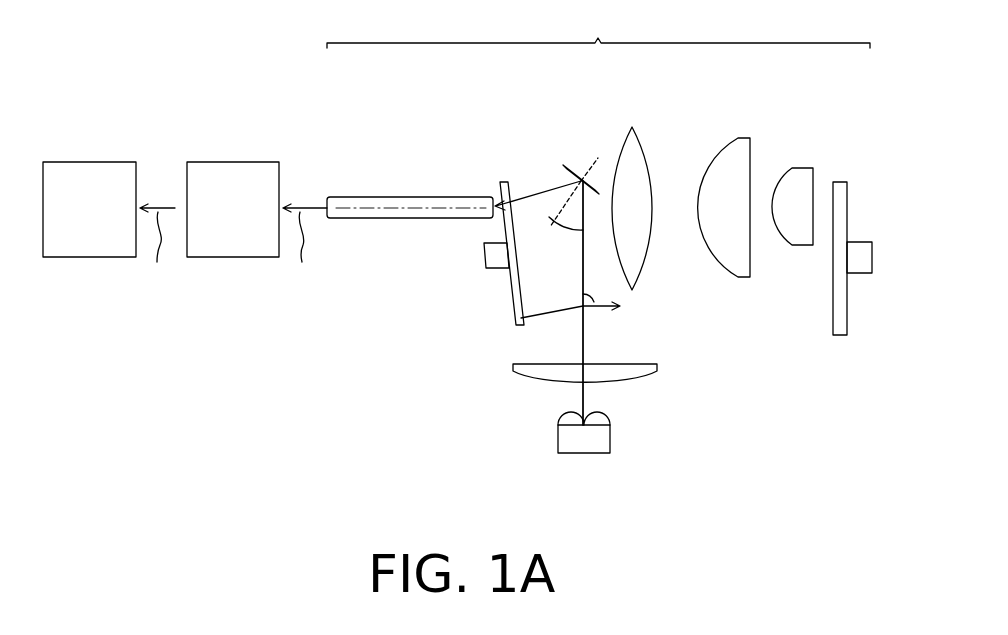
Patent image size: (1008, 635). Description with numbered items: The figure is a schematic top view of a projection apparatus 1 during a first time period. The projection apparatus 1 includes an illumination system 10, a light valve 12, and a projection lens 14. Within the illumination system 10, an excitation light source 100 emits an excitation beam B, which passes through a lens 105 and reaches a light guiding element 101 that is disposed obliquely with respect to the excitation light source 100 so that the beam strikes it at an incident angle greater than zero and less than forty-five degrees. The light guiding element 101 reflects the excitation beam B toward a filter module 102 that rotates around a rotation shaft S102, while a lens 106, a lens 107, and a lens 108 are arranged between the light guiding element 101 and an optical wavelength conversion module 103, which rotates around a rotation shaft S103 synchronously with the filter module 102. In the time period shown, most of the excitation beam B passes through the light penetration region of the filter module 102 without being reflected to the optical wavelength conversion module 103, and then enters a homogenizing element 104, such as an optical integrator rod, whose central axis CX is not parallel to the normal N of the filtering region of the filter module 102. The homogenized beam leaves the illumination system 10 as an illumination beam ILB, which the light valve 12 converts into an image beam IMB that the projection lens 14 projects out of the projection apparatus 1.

The projection apparatus 1 is at (815, 527).
The illumination system 10 is at (598, 27).
The light valve 12 is at (246, 220).
The projection lens 14 is at (103, 220).
The excitation light source 100 is at (610, 440).
The light guiding element 101 is at (568, 172).
The filter module 102 is at (497, 312).
The optical wavelength conversion module 103 is at (856, 324).
The homogenizing element 104 is at (408, 198).
The lens 105 is at (660, 369).
The lens 106 is at (632, 125).
The lens 107 is at (741, 137).
The lens 108 is at (800, 178).
The rotation shaft S102 is at (483, 256).
The rotation shaft S103 is at (861, 248).
The central axis CX is at (355, 206).
The illumination beam ILB is at (305, 252).
The image beam IMB is at (159, 252).
The excitation beam B is at (586, 395).
The normal N is at (612, 306).